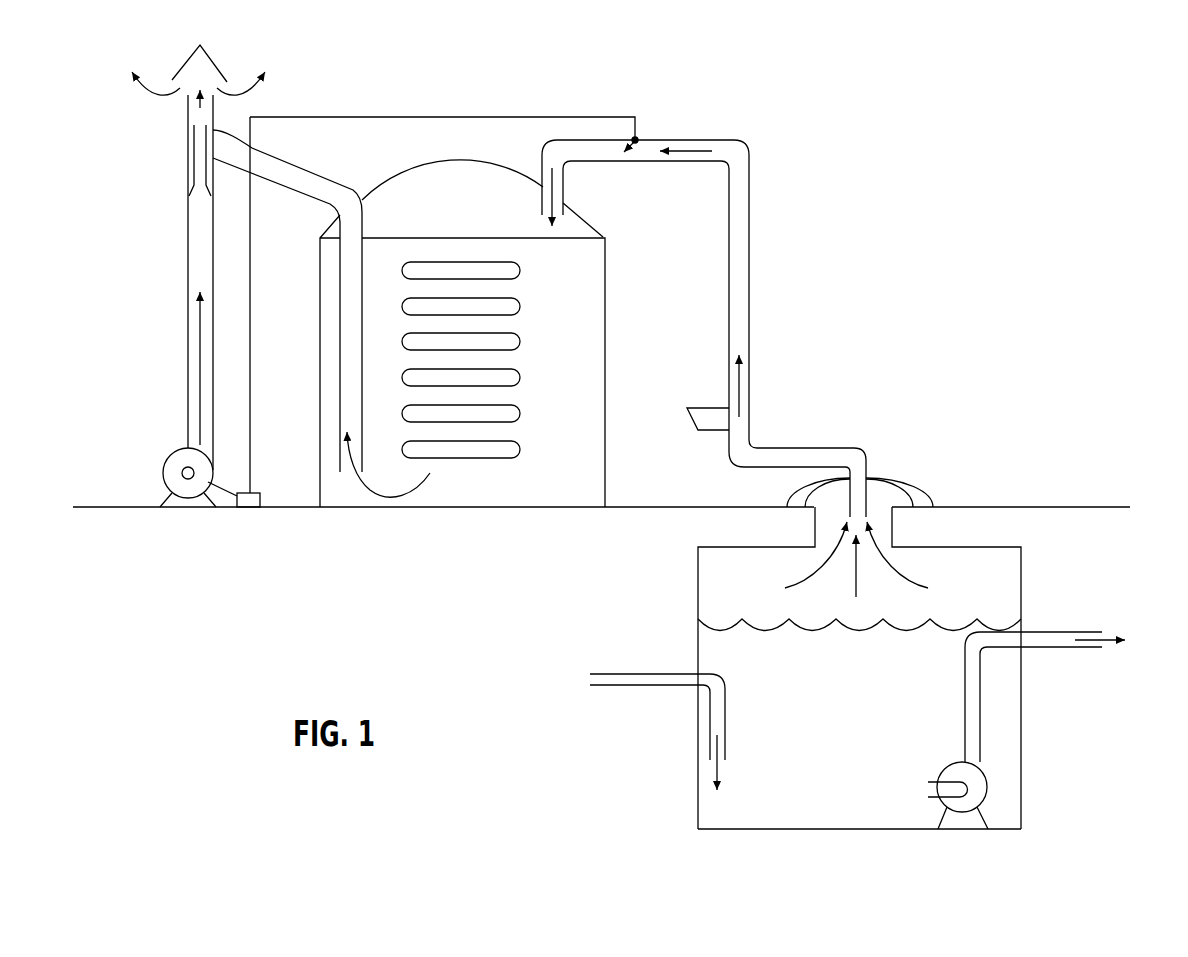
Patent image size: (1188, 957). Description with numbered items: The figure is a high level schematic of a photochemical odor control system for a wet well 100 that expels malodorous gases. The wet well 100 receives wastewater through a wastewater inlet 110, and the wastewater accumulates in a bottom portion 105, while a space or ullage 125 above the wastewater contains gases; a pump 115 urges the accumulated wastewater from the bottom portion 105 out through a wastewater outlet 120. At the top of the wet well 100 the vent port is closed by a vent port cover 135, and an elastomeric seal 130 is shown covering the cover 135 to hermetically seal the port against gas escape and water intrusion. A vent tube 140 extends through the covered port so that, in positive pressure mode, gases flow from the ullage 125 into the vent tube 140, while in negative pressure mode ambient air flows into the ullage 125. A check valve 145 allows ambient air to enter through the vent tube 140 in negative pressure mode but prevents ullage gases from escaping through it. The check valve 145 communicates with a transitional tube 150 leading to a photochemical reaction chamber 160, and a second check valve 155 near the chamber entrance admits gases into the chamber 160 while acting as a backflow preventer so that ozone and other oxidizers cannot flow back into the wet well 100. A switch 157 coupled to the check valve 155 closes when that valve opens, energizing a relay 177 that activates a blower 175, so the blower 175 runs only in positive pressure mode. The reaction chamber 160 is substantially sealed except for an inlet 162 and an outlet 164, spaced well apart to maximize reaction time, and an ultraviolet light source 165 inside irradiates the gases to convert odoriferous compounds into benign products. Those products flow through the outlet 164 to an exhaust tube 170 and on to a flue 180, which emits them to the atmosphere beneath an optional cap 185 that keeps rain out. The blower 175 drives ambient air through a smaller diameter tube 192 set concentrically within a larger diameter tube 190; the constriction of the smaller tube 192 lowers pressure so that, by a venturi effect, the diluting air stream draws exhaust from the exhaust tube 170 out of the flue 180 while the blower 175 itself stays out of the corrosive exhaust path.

The wet well 100 is at (698, 803).
The portion containing wastewater 105 is at (827, 807).
The wastewater inlet 110 is at (615, 676).
The pump 115 is at (945, 775).
The wastewater outlet 120 is at (1047, 645).
The ullage 125 is at (985, 582).
The elastomeric seal 130 is at (913, 490).
The vent port cover 135 is at (877, 493).
The vent tube 140 is at (851, 460).
The check valve 145 is at (693, 425).
The transitional tube 150 is at (752, 265).
The check valve 155 is at (641, 138).
The switch 157 is at (636, 138).
The photochemical reaction chamber 160 is at (462, 163).
The inlet 162 is at (541, 205).
The outlet 164 is at (362, 468).
The ultraviolet light source 165 is at (497, 416).
The exhaust tube 170 is at (277, 163).
The blower 175 is at (172, 465).
The relay 177 is at (252, 495).
The flue 180 is at (188, 118).
The cap 185 is at (190, 60).
The larger diameter tube 190 is at (188, 268).
The smaller diameter tube 192 is at (196, 165).